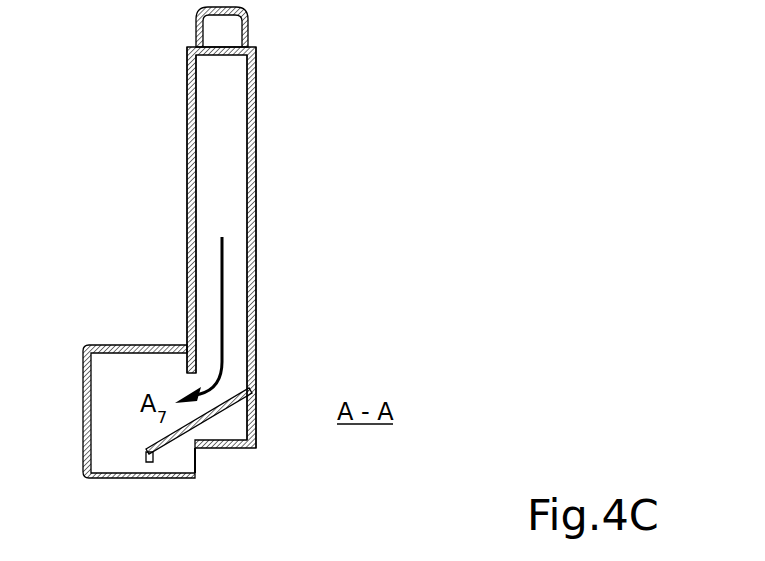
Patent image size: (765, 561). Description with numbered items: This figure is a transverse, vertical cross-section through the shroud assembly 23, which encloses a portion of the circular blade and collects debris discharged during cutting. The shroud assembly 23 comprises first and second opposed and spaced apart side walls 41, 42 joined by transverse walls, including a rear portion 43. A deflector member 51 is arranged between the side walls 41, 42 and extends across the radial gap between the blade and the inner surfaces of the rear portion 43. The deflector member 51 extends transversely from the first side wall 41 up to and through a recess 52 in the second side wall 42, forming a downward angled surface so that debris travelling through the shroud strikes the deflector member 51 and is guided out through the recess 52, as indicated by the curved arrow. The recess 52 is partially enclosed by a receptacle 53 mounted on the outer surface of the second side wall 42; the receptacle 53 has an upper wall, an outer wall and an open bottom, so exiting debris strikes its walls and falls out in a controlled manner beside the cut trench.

The shroud assembly 23 is at (286, 119).
The first side wall 41 is at (256, 210).
The second side wall 42 is at (188, 203).
The rear portion 43 is at (216, 133).
The deflector member 51 is at (147, 462).
The recess 52 is at (176, 373).
The receptacle 53 is at (113, 360).